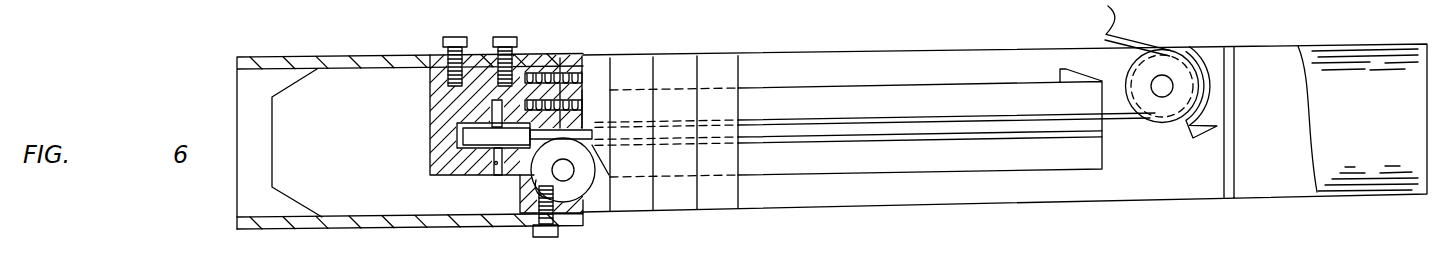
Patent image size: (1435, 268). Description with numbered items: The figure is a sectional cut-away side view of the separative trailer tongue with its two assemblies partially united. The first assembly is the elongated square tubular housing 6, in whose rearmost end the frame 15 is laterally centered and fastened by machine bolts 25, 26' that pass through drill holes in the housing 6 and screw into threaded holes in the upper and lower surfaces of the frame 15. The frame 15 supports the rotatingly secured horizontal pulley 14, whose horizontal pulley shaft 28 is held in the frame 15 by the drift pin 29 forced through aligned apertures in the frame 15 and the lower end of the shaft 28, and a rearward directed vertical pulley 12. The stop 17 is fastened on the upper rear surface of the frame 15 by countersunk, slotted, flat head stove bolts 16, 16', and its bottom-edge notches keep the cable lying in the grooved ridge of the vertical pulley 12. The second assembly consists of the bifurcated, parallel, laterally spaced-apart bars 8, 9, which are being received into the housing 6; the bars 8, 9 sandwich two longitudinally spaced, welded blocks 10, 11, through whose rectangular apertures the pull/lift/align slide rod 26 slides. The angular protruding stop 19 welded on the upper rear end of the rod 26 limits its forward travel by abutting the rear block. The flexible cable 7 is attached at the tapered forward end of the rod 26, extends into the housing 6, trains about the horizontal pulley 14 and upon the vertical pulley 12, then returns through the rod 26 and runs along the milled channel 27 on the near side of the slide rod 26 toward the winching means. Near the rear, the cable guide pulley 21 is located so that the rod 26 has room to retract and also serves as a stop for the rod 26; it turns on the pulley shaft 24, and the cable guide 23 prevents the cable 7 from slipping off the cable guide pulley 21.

The elongated square tubular housing 6 is at (360, 235).
The flexible cable 7 is at (1137, 32).
The bar 8 is at (1357, 82).
The bar 9 is at (322, 92).
The block 10 is at (717, 72).
The block 11 is at (638, 73).
The vertical pulley 12 is at (590, 187).
The horizontal pulley 14 is at (457, 151).
The frame 15 is at (428, 115).
The flat head stove bolt 16 is at (589, 74).
The flat head stove bolt 16' is at (631, 101).
The stop 17 is at (573, 72).
The protruding stop 19 is at (1060, 70).
The cable guide pulley 21 is at (1128, 72).
The cable guide 23 is at (1205, 118).
The pulley shaft 24 is at (1158, 95).
The machine bolt 25 is at (545, 240).
The pull/lift/align slide rod 26 is at (697, 125).
The machine bolt 26' is at (488, 43).
The milled channel 27 is at (877, 142).
The horizontal pulley shaft 28 is at (460, 175).
The drift pin 29 is at (493, 173).